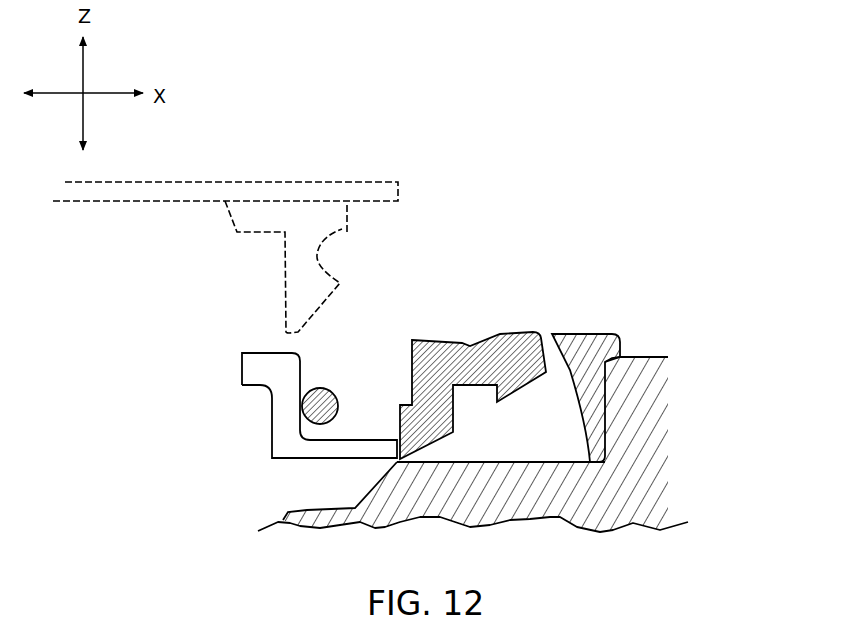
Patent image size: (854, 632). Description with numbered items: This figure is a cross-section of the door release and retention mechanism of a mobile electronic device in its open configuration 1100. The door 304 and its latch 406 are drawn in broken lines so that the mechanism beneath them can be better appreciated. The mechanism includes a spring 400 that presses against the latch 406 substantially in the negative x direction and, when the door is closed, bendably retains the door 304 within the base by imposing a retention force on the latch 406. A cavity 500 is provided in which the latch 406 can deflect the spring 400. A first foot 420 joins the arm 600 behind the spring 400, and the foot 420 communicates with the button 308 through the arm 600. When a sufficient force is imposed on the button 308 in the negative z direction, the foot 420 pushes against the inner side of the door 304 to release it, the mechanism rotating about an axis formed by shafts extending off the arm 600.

The door 304 is at (262, 184).
The latch 406 is at (318, 227).
The foot 420 is at (258, 359).
The arm 600 is at (304, 445).
The spring 400 is at (297, 405).
The cavity 500 is at (357, 408).
The button 308 is at (515, 325).
The open configuration 1100 is at (577, 224).